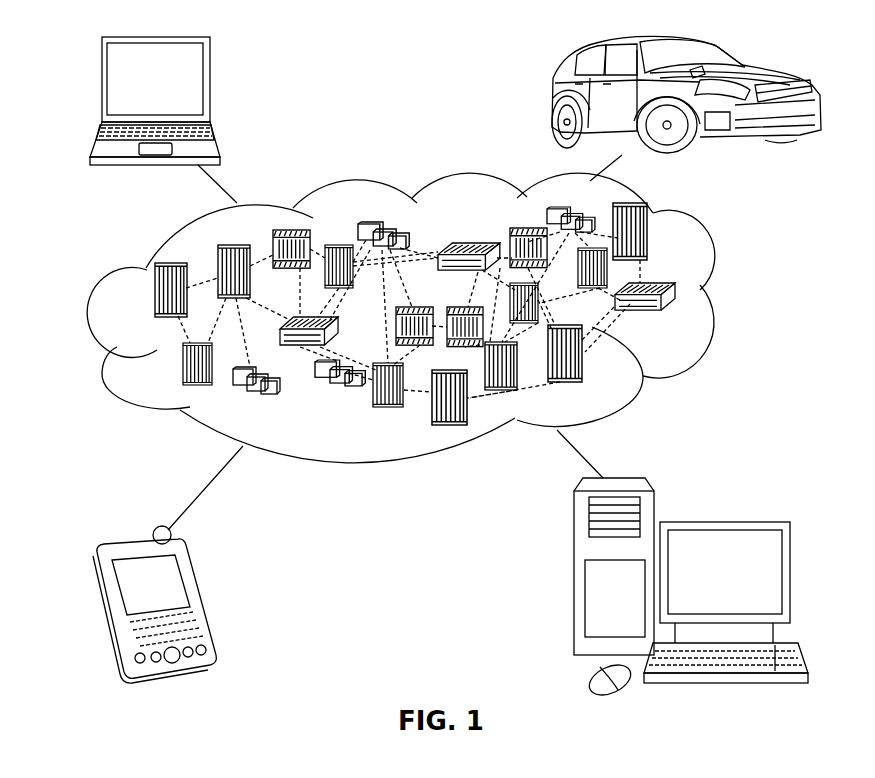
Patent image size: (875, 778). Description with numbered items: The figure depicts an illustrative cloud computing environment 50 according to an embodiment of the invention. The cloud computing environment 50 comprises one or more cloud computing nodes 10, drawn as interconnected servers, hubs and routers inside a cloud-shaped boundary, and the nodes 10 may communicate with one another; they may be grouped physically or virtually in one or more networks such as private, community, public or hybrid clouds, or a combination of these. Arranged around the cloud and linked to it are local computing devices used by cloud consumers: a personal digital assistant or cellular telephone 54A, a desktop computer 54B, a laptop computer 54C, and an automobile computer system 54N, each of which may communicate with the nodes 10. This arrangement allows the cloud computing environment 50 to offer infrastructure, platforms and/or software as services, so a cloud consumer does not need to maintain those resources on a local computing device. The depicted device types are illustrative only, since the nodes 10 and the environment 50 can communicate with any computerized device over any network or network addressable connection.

The cloud computing node 10 is at (681, 322).
The cloud computing environment 50 is at (716, 295).
The personal digital assistant or cellular telephone 54A is at (203, 596).
The desktop computer 54B is at (722, 521).
The laptop computer 54C is at (214, 86).
The automobile computer system 54N is at (552, 100).